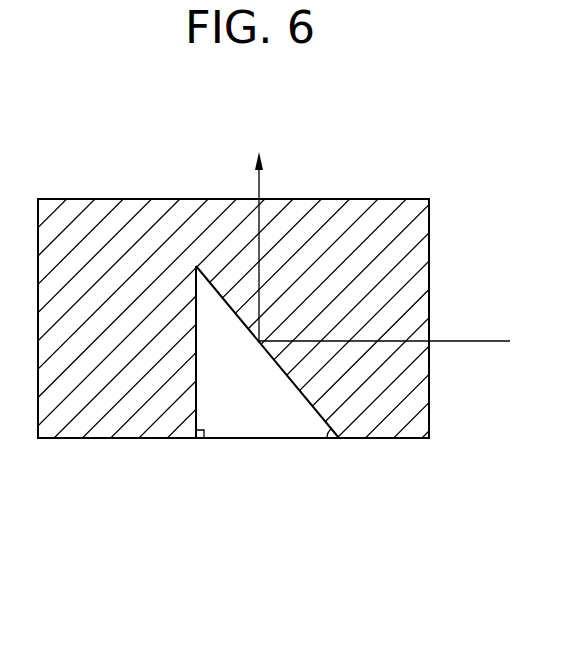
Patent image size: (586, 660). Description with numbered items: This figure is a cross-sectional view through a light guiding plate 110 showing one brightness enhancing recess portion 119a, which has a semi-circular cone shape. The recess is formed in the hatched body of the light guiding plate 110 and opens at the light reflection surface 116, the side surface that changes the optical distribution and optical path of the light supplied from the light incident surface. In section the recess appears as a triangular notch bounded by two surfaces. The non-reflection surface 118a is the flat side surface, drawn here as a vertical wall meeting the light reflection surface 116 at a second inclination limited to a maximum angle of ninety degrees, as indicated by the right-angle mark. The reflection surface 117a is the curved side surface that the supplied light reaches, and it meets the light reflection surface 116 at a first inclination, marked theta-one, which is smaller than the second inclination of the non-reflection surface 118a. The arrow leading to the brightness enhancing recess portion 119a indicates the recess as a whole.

The light guiding plate 110 is at (423, 399).
The light reflection surface 116 is at (388, 438).
The reflection surface 117a is at (285, 378).
The non-reflection surface 118a is at (197, 385).
The brightness enhancing recess portion 119a is at (264, 529).